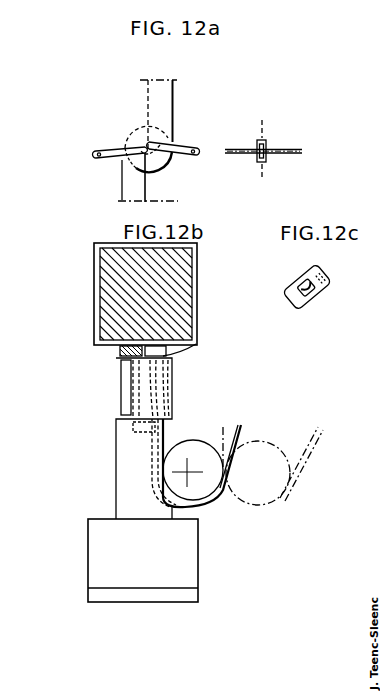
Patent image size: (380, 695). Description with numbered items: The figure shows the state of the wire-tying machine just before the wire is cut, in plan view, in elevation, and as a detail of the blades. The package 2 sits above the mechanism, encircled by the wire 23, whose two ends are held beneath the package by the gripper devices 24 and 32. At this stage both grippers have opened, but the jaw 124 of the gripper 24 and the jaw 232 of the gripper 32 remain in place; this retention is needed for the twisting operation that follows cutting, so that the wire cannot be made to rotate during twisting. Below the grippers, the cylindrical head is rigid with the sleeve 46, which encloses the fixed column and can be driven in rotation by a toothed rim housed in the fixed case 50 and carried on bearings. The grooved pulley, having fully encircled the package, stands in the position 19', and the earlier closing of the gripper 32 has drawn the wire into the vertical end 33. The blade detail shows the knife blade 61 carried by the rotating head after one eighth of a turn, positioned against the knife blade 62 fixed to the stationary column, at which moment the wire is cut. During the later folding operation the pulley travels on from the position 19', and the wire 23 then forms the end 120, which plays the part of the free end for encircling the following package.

In FIG. 12A, the jaw 232 is at (168, 114).
In FIG. 12A, the jaw 124 is at (122, 189).
In FIG. 12B, the package 2 is at (178, 293).
In FIG. 12B, the wire 23 is at (196, 322).
In FIG. 12B, the gripper 24 is at (133, 347).
In FIG. 12B, the gripper 32 is at (156, 348).
In FIG. 12B, the sleeve 46 is at (116, 473).
In FIG. 12B, the vertical end of the wire 33 is at (156, 437).
In FIG. 12B, the pulley position 19' is at (193, 456).
In FIG. 12B, the wire end 120 is at (230, 430).
In FIG. 12B, the fixed case 50 is at (97, 570).
In FIG. 12C, the knife blade 61 is at (305, 273).
In FIG. 12C, the knife blade 62 is at (320, 298).